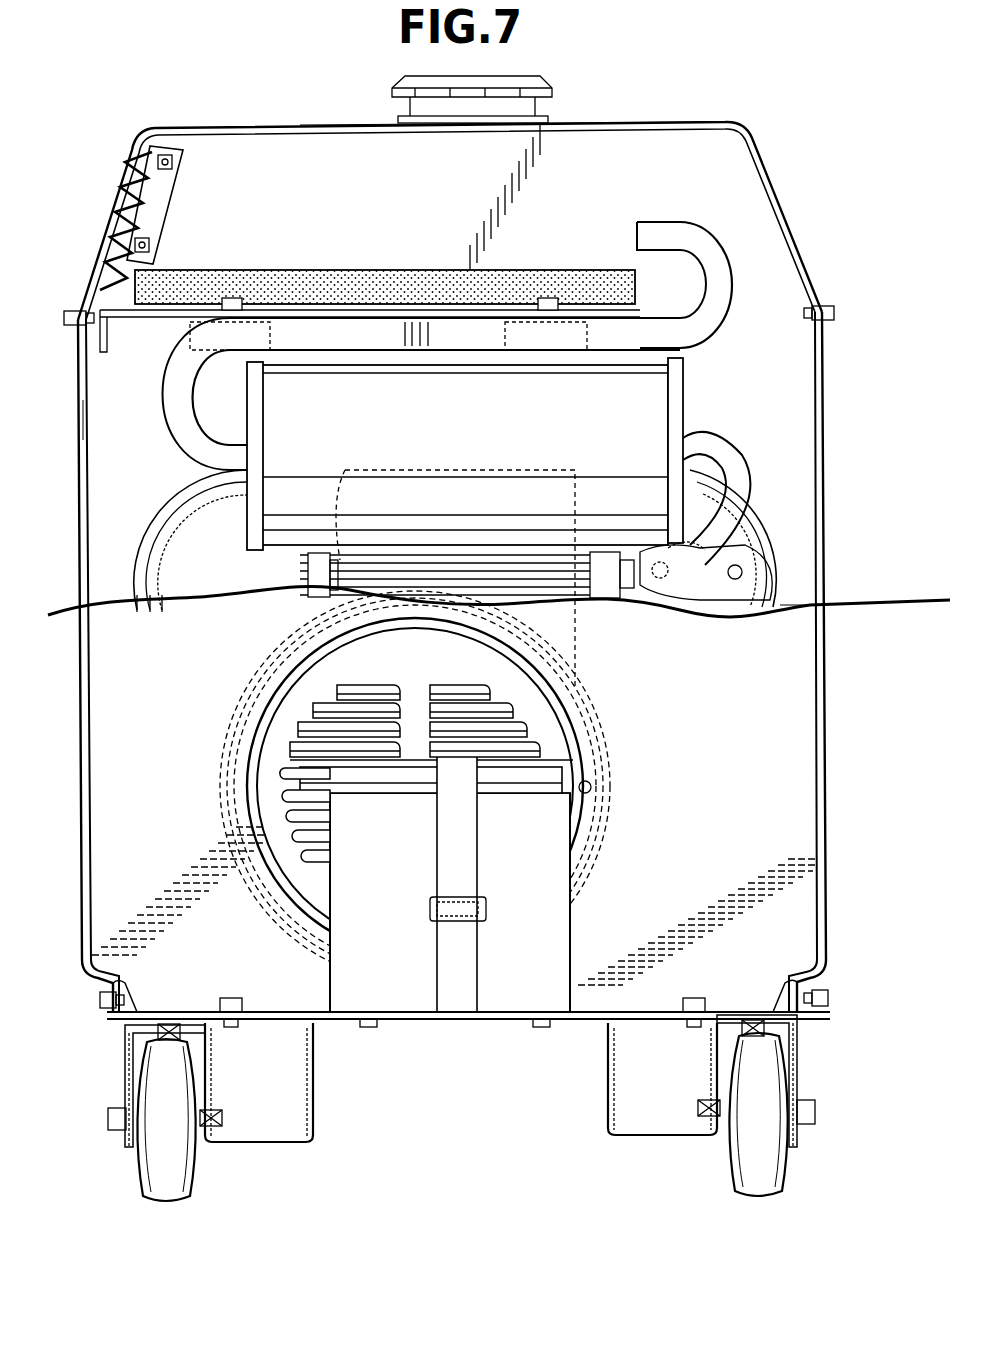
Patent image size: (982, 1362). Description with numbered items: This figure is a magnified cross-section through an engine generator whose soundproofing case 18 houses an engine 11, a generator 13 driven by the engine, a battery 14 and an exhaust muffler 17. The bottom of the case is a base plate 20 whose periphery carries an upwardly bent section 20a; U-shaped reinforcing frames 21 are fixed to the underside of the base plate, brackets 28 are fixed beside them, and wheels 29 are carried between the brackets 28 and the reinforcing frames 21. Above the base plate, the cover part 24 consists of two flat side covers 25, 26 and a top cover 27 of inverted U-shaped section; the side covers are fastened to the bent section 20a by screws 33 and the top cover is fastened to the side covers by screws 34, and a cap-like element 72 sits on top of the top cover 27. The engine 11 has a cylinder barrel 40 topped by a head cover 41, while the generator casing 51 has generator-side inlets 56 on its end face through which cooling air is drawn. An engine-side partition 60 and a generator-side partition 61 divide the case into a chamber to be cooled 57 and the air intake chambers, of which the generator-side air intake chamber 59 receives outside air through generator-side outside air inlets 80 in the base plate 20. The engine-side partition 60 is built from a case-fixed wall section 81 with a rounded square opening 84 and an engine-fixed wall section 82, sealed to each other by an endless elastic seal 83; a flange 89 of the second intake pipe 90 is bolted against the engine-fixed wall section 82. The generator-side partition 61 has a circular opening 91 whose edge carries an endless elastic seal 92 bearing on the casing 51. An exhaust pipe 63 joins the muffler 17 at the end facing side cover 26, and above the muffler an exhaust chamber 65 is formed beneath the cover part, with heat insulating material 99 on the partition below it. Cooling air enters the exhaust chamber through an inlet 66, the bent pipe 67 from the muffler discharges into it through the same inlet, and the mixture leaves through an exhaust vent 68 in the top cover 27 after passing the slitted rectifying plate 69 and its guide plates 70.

The engine 11 is at (305, 565).
The generator 13 is at (590, 696).
The battery 14 is at (548, 935).
The exhaust muffler 17 is at (498, 447).
The soundproofing case 18 is at (832, 815).
The base plate 20 is at (520, 1015).
The bent section 20a is at (120, 988).
The reinforcing frame 21 is at (315, 1073).
The cover part 24 is at (790, 170).
The side cover 25 is at (80, 548).
The side cover 26 is at (825, 600).
The top cover 27 is at (700, 120).
The bracket 28 is at (125, 1078).
The wheel 29 is at (170, 1160).
The screw 33 is at (100, 1000).
The screw 34 is at (74, 326).
The cylinder barrel 40 is at (585, 598).
The head cover 41 is at (533, 470).
The casing 51 is at (262, 760).
The generator-side inlet 56 is at (520, 750).
The chamber to be cooled 57 is at (151, 495).
The generator-side air intake chamber 59 is at (238, 930).
The engine-side partition 60 is at (78, 435).
The generator-side partition 61 is at (787, 600).
The exhaust pipe 63 is at (712, 453).
The exhaust chamber 65 is at (418, 208).
The inlet 66 is at (636, 290).
The pipe 67 is at (402, 345).
The exhaust vent 68 is at (125, 163).
The rectifying plate 69 is at (136, 150).
The guide plate 70 is at (125, 228).
The fuel cap 72 is at (540, 108).
The generator-side outside air inlet 80 is at (250, 1010).
The case-fixed wall section 81 is at (110, 417).
The engine-fixed wall section 82 is at (178, 600).
The endless elastic seal 83 is at (187, 517).
The opening 84 is at (165, 545).
The flange 89 is at (740, 590).
The second intake pipe 90 is at (682, 592).
The opening 91 is at (598, 794).
The endless elastic seal 92 is at (262, 800).
The heat insulating material 99 is at (520, 280).